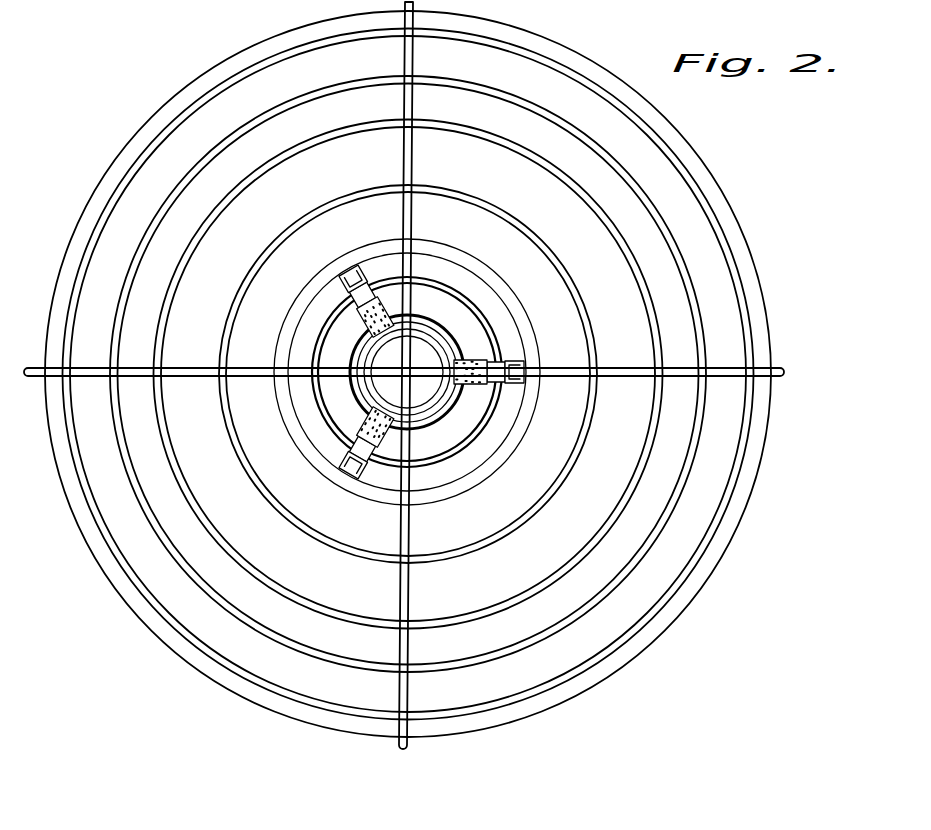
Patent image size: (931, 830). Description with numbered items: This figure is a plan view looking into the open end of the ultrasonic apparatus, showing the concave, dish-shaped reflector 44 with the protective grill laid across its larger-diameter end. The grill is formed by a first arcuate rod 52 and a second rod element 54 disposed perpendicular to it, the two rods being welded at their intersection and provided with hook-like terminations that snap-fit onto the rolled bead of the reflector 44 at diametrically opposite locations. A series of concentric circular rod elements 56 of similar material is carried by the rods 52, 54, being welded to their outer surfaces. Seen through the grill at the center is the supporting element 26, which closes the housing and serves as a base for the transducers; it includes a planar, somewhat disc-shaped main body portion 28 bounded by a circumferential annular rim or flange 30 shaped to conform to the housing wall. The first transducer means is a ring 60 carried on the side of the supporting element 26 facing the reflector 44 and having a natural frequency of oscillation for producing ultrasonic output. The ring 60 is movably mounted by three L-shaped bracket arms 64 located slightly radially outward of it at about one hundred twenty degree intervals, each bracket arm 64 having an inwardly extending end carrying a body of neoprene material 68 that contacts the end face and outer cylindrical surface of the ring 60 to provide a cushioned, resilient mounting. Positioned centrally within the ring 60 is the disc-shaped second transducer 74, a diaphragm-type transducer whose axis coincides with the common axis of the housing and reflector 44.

The supporting element 26 is at (331, 320).
The main body portion 28 is at (498, 313).
The annular rim or flange 30 is at (510, 453).
The reflector 44 is at (692, 258).
The first rod 52 is at (637, 372).
The rod element 54 is at (412, 163).
The concentric circular rod elements 56 is at (683, 174).
The ring transducer 60 is at (448, 326).
The bracket arms 64 is at (352, 274).
The body of resilient material 68 is at (366, 425).
The second transducer 74 is at (385, 387).